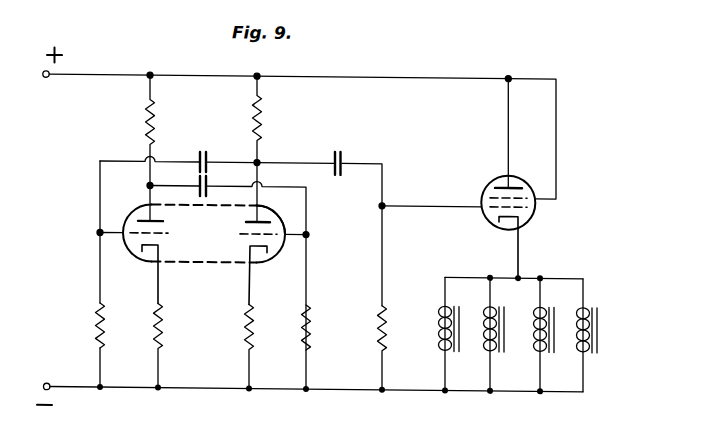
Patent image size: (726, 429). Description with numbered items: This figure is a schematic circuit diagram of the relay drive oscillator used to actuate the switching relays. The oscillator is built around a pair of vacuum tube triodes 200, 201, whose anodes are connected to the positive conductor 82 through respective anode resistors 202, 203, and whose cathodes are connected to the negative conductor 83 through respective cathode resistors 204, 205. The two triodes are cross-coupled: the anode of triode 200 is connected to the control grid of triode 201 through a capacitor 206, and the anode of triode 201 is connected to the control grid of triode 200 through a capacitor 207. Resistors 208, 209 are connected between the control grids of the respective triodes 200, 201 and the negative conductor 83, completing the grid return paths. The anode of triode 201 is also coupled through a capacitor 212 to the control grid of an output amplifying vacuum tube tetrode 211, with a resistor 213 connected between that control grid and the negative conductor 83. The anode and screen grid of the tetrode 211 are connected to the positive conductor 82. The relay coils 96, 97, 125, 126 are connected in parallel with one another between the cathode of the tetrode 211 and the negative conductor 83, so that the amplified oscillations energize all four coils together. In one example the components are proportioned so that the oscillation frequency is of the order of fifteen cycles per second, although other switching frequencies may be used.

The positive conductor 82 is at (112, 57).
The negative conductor 83 is at (70, 386).
The relay coil 96 is at (438, 326).
The relay coil 97 is at (488, 338).
The relay coil 125 is at (538, 340).
The relay coil 126 is at (586, 349).
The vacuum tube triode 200 is at (130, 250).
The vacuum tube triode 201 is at (286, 218).
The anode resistor 202 is at (147, 108).
The anode resistor 203 is at (261, 104).
The cathode resistor 204 is at (155, 323).
The cathode resistor 205 is at (246, 323).
The capacitor 206 is at (206, 183).
The capacitor 207 is at (203, 148).
The resistor 208 is at (97, 324).
The resistor 209 is at (302, 327).
The output amplifying vacuum tube tetrode 211 is at (488, 179).
The capacitor 212 is at (345, 150).
The resistor 213 is at (376, 326).